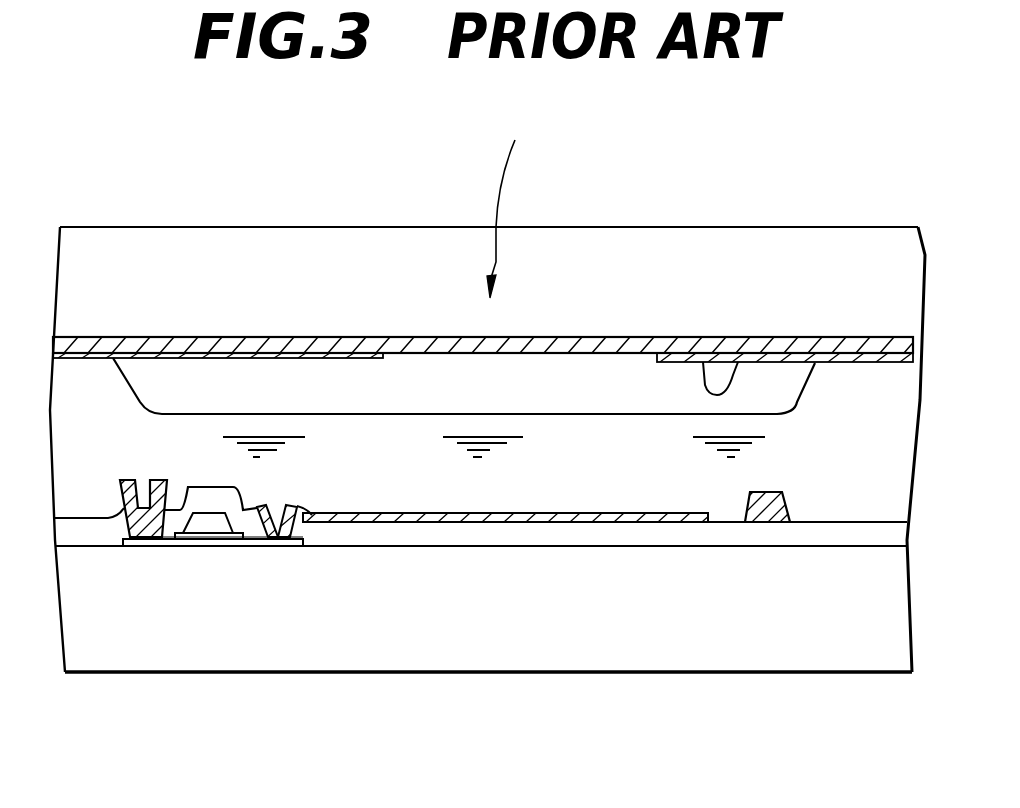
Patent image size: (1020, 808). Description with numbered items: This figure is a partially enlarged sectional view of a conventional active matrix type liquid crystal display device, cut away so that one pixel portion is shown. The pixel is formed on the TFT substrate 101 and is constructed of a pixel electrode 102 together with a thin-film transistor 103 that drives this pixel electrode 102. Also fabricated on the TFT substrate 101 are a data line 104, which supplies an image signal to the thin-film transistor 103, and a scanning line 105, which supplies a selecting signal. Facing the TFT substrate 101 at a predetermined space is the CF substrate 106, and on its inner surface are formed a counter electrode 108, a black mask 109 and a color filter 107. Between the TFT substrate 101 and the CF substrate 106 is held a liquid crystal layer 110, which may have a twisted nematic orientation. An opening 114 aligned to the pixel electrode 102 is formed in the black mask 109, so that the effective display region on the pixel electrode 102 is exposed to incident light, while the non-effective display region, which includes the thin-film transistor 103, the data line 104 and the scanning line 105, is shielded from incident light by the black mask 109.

The TFT substrate 101 is at (625, 610).
The pixel electrode 102 is at (493, 523).
The thin-film transistor 103 is at (222, 580).
The data line 104 is at (147, 540).
The scanning line 105 is at (765, 522).
The CF substrate 106 is at (278, 262).
The color filter 107 is at (590, 388).
The counter electrode 108 is at (123, 345).
The black mask 109 is at (738, 363).
The liquid crystal layer 110 is at (842, 475).
The opening 114 is at (511, 200).